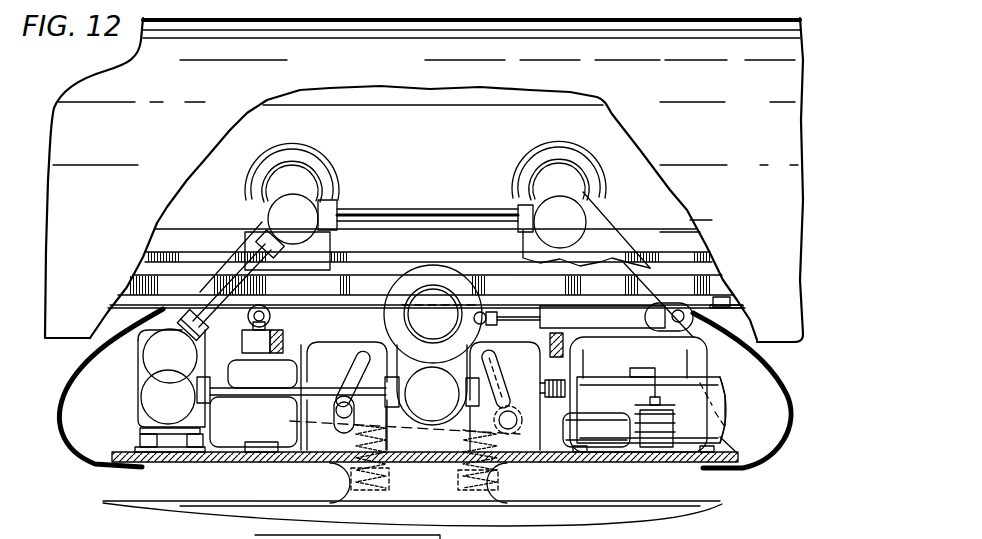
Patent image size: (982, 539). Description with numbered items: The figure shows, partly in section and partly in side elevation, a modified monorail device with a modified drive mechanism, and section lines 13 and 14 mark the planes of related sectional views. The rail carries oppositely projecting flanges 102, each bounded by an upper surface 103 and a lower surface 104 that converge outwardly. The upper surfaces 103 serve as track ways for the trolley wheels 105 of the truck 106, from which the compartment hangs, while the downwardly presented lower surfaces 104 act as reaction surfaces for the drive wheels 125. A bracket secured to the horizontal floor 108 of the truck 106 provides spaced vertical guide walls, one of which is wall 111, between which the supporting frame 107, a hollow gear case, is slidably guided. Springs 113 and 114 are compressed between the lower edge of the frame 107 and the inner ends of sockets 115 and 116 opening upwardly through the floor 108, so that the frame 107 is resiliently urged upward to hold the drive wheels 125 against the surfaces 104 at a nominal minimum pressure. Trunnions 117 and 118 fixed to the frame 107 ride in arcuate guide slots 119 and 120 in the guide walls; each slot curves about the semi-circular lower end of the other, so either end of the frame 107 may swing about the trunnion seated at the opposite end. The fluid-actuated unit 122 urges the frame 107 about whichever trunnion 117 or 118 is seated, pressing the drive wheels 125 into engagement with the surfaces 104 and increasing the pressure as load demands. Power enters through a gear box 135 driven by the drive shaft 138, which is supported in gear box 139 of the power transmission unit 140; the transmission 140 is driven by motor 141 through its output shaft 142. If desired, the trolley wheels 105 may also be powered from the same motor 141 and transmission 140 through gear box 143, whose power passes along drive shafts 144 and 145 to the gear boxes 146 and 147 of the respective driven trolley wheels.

The section line 13- 13 is at (433, 372).
The section line 14- 14 is at (485, 538).
The horizontally projecting flange 102 is at (213, 247).
The upper surface 103 is at (160, 242).
The lower surface 104 is at (147, 270).
The trolley wheel 105 is at (322, 163).
The monorail truck 106 is at (680, 460).
The supporting frame 107 is at (382, 336).
The horizontal floor 108 is at (255, 463).
The vertical guide wall 111 is at (527, 369).
The spring 113 is at (345, 487).
The spring 114 is at (510, 485).
The socket 115 is at (384, 464).
The socket 116 is at (465, 466).
The trunnion 117 is at (405, 423).
The trunnion 118 is at (499, 422).
The guide slot 119 is at (343, 376).
The guide slot 120 is at (512, 383).
The fluid-actuated unit 122 is at (601, 327).
The drive wheel 125 is at (423, 277).
The gear box 135 is at (417, 403).
The drive shaft 138 is at (274, 397).
The gear box 139 is at (157, 407).
The power transmission unit 140 is at (264, 397).
The motor 141 is at (686, 368).
The output shaft 142 is at (553, 384).
The gear box 143 is at (150, 360).
The drive shaft 144 is at (213, 290).
The drive shaft 145 is at (428, 210).
The gear box 146 is at (293, 219).
The gear box 147 is at (568, 233).